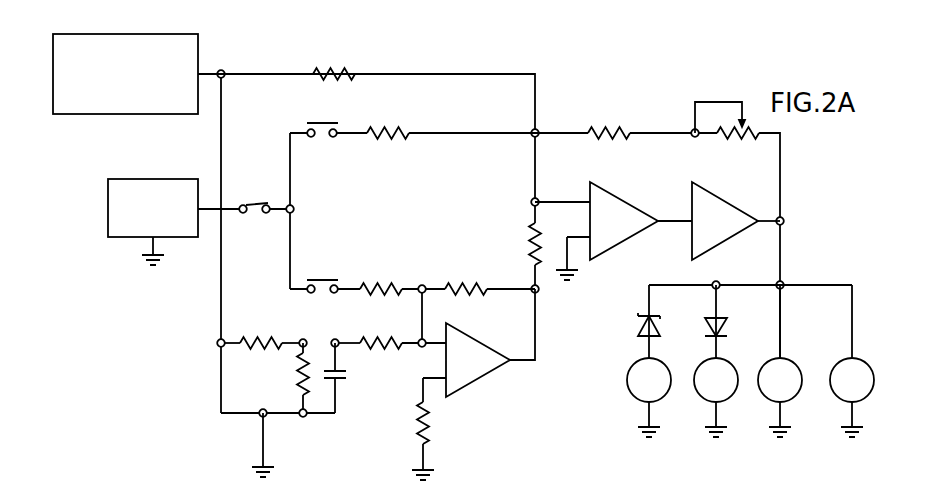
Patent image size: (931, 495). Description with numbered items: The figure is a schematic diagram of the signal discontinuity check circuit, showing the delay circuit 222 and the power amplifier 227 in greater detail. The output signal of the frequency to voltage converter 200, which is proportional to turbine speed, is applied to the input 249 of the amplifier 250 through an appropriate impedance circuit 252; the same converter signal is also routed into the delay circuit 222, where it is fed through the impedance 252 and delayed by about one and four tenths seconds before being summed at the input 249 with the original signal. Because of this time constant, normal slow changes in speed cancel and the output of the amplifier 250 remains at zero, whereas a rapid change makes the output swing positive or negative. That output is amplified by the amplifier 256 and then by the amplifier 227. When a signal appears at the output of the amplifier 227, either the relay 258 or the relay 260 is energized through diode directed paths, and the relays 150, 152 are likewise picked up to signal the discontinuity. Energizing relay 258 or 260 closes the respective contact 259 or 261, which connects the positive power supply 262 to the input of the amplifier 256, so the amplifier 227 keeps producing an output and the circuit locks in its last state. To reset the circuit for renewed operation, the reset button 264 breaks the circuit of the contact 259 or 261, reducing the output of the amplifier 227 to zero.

The frequency to voltage converter 200 is at (165, 114).
The positive power supply 262 is at (136, 237).
The reset button 264 is at (262, 203).
The contact 261 is at (324, 124).
The contact 259 is at (327, 280).
The impedance circuit 252 is at (270, 340).
The input of amplifier 249 is at (419, 350).
The delay circuit 222 is at (329, 457).
The amplifier 250 is at (483, 378).
The amplifier 256 is at (606, 246).
The power amplifier 227 is at (713, 246).
The relay 258 is at (634, 400).
The relay 260 is at (705, 399).
The relay 150 is at (770, 399).
The relay 152 is at (837, 402).